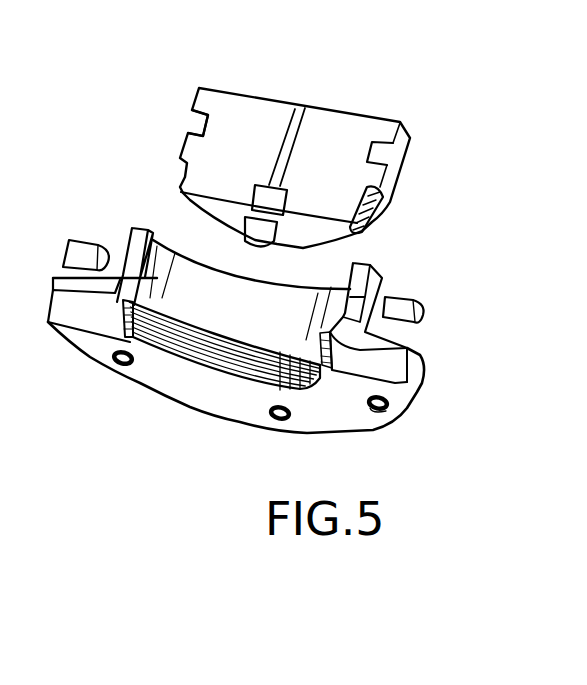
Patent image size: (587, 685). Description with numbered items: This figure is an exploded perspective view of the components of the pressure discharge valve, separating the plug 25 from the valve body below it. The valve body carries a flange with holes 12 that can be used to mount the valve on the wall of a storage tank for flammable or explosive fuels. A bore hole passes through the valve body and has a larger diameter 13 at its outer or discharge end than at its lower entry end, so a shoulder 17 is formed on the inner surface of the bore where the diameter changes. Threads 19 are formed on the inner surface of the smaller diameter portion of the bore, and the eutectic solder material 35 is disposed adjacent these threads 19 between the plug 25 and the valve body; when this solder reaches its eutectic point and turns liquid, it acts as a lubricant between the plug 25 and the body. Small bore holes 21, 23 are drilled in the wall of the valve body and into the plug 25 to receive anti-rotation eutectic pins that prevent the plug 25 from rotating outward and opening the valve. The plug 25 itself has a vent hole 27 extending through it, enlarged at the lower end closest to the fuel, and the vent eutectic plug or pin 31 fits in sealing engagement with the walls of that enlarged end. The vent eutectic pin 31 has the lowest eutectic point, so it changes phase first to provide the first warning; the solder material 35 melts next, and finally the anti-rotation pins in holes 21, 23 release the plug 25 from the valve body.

The holes 12 is at (410, 412).
The larger diameter 13 is at (53, 278).
The shoulder 17 is at (377, 349).
The threads 19 is at (206, 356).
The small bore hole 21 is at (203, 130).
The small bore hole 23 is at (378, 153).
The plug 25 is at (333, 153).
The vent hole 27 is at (283, 140).
The vent eutectic plug or pin 31 is at (257, 232).
The eutectic solder material 35 is at (120, 318).